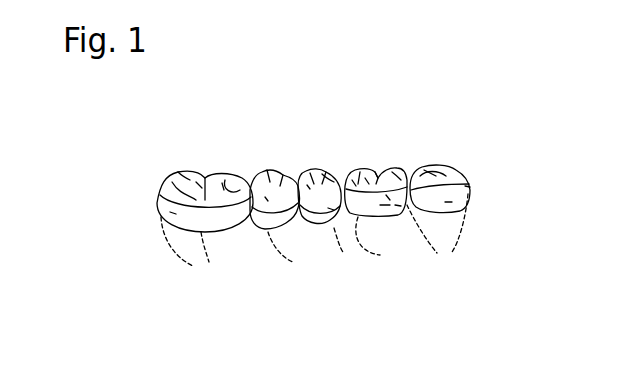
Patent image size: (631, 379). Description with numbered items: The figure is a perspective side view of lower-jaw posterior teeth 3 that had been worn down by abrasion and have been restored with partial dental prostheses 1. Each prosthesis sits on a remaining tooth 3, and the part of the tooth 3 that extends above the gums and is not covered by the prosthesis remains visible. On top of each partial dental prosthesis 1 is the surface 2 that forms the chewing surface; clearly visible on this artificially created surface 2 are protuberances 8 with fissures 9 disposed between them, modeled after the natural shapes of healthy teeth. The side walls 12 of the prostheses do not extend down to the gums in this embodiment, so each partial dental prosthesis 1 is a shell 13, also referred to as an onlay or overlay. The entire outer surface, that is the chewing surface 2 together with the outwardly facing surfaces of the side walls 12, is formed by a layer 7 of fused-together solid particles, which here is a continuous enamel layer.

The partial dental prosthesis 1 is at (235, 158).
The surface forming the chewing surface 2 is at (192, 182).
The posterior tooth 3 is at (185, 243).
The layer 7 is at (187, 182).
The protuberance 8 is at (222, 183).
The fissure 9 is at (187, 183).
The side wall 12 is at (385, 205).
The shell 13 is at (173, 212).